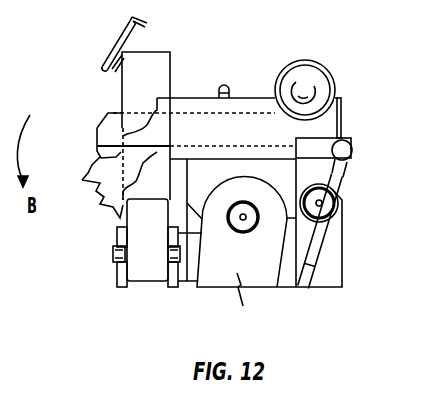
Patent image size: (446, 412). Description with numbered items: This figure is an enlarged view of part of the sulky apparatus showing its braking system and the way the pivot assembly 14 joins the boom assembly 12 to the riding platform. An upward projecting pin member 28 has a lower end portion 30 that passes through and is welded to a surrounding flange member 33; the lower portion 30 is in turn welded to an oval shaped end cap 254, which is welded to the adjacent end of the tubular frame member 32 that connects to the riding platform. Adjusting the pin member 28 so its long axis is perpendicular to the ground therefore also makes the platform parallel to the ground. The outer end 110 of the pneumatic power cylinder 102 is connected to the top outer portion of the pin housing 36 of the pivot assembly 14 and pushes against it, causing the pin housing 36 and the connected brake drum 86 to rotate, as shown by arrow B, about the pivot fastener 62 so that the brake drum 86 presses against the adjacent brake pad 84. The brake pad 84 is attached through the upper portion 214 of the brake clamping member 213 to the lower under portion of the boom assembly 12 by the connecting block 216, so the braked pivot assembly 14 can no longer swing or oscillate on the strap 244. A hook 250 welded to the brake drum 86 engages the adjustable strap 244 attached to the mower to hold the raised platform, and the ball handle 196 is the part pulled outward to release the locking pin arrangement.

The boom assembly 12 is at (249, 279).
The pivot assembly 14 is at (256, 96).
The pin member 28 is at (222, 130).
The lower end portion 30 is at (178, 127).
The tubular frame member 32 is at (110, 207).
The flange member 33 is at (163, 131).
The pin housing 36 is at (308, 132).
The pivot fastener 62 is at (253, 217).
The brake pad 84 is at (138, 266).
The brake drum 86 is at (162, 88).
The pneumatic power cylinder 102 is at (311, 273).
The outer end 110 is at (333, 198).
The ball handle 196 is at (300, 82).
The brake clamping member 213 is at (127, 281).
The upper portion 214 is at (176, 281).
The connecting block 216 is at (186, 279).
The adjustable strap 244 is at (133, 35).
The hook 250 is at (100, 67).
The oval shaped end cap 254 is at (112, 152).